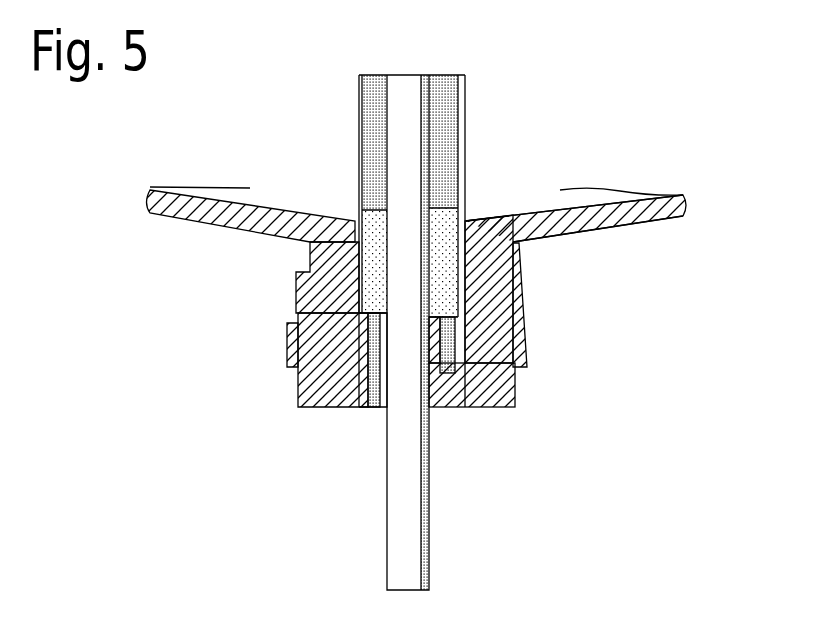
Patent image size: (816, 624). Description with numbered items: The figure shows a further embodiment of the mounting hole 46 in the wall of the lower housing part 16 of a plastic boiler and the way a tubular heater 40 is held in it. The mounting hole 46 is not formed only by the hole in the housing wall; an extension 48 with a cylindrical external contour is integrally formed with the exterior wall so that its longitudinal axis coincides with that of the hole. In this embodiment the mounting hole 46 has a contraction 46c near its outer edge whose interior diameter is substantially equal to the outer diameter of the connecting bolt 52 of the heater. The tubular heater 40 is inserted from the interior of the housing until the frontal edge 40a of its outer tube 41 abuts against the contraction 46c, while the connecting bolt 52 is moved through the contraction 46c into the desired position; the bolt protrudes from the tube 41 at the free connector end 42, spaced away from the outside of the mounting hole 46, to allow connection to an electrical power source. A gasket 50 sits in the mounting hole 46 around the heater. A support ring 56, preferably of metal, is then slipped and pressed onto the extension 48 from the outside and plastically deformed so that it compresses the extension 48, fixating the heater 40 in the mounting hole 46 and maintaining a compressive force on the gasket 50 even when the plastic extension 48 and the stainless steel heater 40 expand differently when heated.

The lower housing part 16 is at (683, 198).
The tubular heater 40 is at (440, 96).
The frontal edge 40a is at (348, 407).
The tube 41 is at (318, 266).
The free connector end 42 is at (470, 212).
The mounting hole 46 is at (355, 225).
The contraction 46c is at (375, 407).
The extension 48 is at (303, 310).
The gasket 50 is at (513, 373).
The connecting bolt 52 is at (430, 500).
The support ring 56 is at (527, 283).